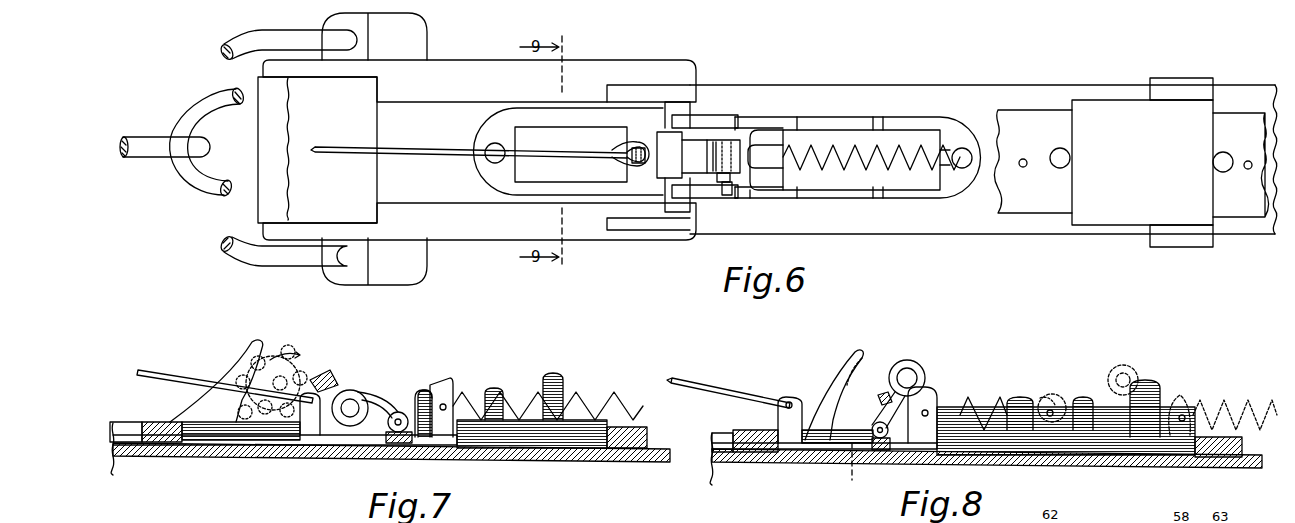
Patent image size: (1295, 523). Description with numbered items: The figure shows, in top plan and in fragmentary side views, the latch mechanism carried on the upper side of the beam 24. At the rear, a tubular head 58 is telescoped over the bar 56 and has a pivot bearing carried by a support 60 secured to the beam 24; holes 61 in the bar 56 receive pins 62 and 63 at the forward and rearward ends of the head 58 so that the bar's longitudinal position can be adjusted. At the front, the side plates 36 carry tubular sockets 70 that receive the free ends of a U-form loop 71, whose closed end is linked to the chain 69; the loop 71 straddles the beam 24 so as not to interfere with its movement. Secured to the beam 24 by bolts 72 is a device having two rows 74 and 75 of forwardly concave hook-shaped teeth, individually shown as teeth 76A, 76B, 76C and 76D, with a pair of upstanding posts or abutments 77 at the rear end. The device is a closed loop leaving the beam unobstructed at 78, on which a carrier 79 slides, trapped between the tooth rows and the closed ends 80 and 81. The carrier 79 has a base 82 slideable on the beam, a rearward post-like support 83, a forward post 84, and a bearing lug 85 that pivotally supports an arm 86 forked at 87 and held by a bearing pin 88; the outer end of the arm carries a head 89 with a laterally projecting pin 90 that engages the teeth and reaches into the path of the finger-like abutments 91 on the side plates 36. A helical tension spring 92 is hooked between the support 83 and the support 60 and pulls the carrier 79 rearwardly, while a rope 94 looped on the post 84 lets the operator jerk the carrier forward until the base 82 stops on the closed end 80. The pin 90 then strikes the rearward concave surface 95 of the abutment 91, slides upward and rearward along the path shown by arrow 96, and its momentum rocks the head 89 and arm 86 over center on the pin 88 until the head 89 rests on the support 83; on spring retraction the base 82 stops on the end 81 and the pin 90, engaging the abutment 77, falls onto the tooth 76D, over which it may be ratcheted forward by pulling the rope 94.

In FIG. 6, the beam 24 is at (1003, 236).
In FIG. 7, the beam 24 is at (637, 463).
In FIG. 8, the beam 24 is at (1144, 468).
In FIG. 6, the side plates 36 is at (622, 50).
In FIG. 6, the bar 56 is at (1250, 218).
In FIG. 6, the tubular head 58 is at (1115, 226).
In FIG. 6, the support 60 is at (1205, 248).
In FIG. 6, the holes 61 is at (1023, 168).
In FIG. 6, the pin 62 is at (1058, 169).
In FIG. 6, the pin 63 is at (1224, 173).
In FIG. 6, the link or flexible chain 69 is at (141, 141).
In FIG. 6, the tubular sockets 70 is at (416, 32).
In FIG. 6, the U-form loop 71 is at (227, 98).
In FIG. 6, the bolts 72 is at (495, 143).
In FIG. 6, the row of teeth 74 is at (823, 125).
In FIG. 6, the row of teeth 75 is at (835, 195).
In FIG. 7, the tooth 76A is at (322, 372).
In FIG. 8, the tooth 76A is at (878, 396).
In FIG. 6, the tooth 76B is at (705, 157).
In FIG. 7, the tooth 76B is at (422, 390).
In FIG. 8, the tooth 76B is at (990, 392).
In FIG. 7, the tooth 76C is at (428, 388).
In FIG. 8, the tooth 76C is at (1016, 400).
In FIG. 6, the tooth 76D is at (797, 124).
In FIG. 7, the tooth 76D is at (495, 388).
In FIG. 8, the tooth 76D is at (1080, 397).
In FIG. 6, the posts or abutments 77 is at (880, 120).
In FIG. 7, the posts or abutments 77 is at (553, 373).
In FIG. 8, the posts or abutments 77 is at (1158, 385).
In FIG. 6, the unobstructed upper side 78 is at (727, 158).
In FIG. 6, the carrier 79 is at (752, 192).
In FIG. 7, the carrier 79 is at (350, 447).
In FIG. 8, the carrier 79 is at (796, 452).
In FIG. 6, the closed end 80 is at (518, 176).
In FIG. 7, the closed end 80 is at (200, 452).
In FIG. 8, the closed end 80 is at (770, 460).
In FIG. 6, the closed end 81 is at (938, 183).
In FIG. 7, the closed end 81 is at (584, 450).
In FIG. 8, the closed end 81 is at (1180, 458).
In FIG. 6, the base 82 is at (784, 143).
In FIG. 7, the base 82 is at (474, 449).
In FIG. 8, the base 82 is at (945, 456).
In FIG. 6, the rearward post-like support 83 is at (757, 131).
In FIG. 7, the rearward post-like support 83 is at (452, 384).
In FIG. 8, the rearward post-like support 83 is at (935, 390).
In FIG. 6, the forward post 84 is at (621, 141).
In FIG. 7, the forward post 84 is at (307, 437).
In FIG. 8, the forward post 84 is at (780, 418).
In FIG. 6, the bearing lug 85 is at (720, 185).
In FIG. 7, the bearing lug 85 is at (390, 445).
In FIG. 8, the bearing lug 85 is at (876, 452).
In FIG. 7, the arm 86 is at (380, 396).
In FIG. 8, the arm 86 is at (880, 413).
In FIG. 6, the fork 87 is at (710, 156).
In FIG. 6, the bearing pin 88 is at (728, 197).
In FIG. 7, the bearing pin 88 is at (399, 411).
In FIG. 8, the bearing pin 88 is at (884, 440).
In FIG. 6, the head 89 is at (651, 171).
In FIG. 7, the head 89 is at (340, 392).
In FIG. 8, the head 89 is at (912, 362).
In FIG. 6, the pin 90 is at (690, 110).
In FIG. 7, the pin 90 is at (352, 398).
In FIG. 8, the pin 90 is at (917, 372).
In FIG. 6, the abutments 91 is at (652, 92).
In FIG. 7, the abutments 91 is at (238, 345).
In FIG. 8, the abutments 91 is at (834, 358).
In FIG. 6, the helical tension spring 92 is at (862, 168).
In FIG. 7, the helical tension spring 92 is at (594, 396).
In FIG. 8, the helical tension spring 92 is at (988, 398).
In FIG. 6, the chain or rope 94 is at (392, 149).
In FIG. 7, the chain or rope 94 is at (160, 370).
In FIG. 8, the chain or rope 94 is at (729, 387).
In FIG. 8, the concave surface 95 is at (833, 392).
In FIG. 7, the arrow 96 is at (275, 350).